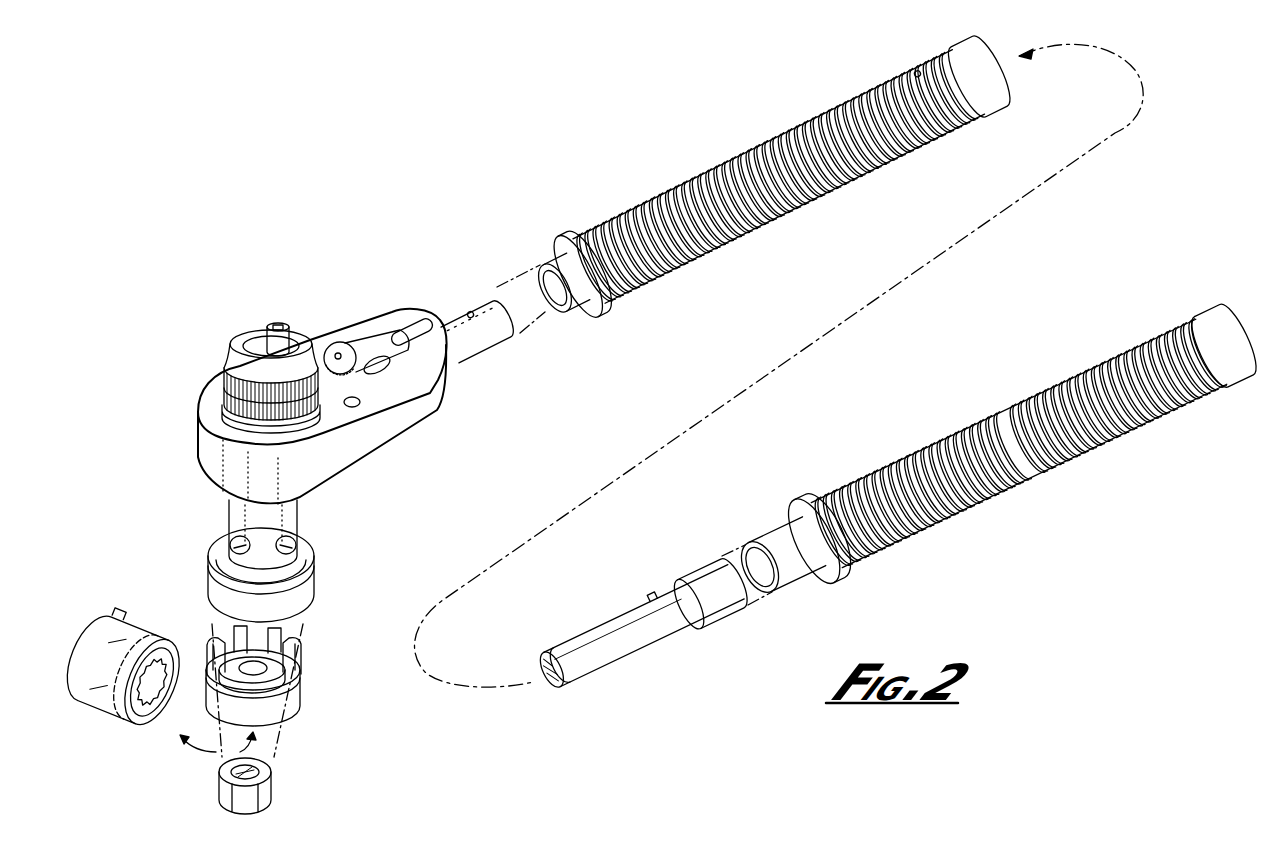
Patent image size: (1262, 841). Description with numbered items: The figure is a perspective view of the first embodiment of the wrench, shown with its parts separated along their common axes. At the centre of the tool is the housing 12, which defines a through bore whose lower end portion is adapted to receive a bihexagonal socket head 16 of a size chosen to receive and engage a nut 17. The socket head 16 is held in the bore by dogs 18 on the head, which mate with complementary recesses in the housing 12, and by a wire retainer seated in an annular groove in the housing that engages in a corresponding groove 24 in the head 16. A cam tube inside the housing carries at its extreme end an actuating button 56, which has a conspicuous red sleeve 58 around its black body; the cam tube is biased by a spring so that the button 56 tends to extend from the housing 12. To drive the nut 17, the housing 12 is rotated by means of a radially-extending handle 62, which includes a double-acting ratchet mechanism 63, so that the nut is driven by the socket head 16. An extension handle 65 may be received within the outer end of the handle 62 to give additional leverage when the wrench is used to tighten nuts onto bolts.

The housing 12 is at (263, 517).
The bihexagonal socket head 16 is at (282, 703).
The nut 17 is at (222, 795).
The dogs 18 is at (212, 653).
The groove 24 is at (253, 692).
The actuating button 56 is at (280, 322).
The red sleeve 58 is at (262, 350).
The handle 62 is at (718, 218).
The double-acting ratchet mechanism 63 is at (352, 450).
The extension handle 65 is at (905, 490).